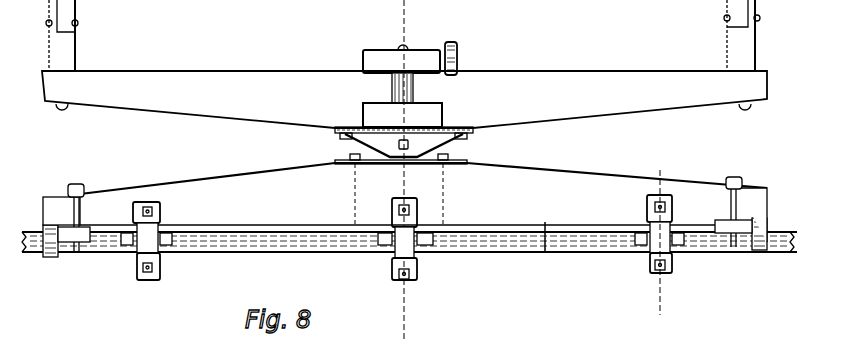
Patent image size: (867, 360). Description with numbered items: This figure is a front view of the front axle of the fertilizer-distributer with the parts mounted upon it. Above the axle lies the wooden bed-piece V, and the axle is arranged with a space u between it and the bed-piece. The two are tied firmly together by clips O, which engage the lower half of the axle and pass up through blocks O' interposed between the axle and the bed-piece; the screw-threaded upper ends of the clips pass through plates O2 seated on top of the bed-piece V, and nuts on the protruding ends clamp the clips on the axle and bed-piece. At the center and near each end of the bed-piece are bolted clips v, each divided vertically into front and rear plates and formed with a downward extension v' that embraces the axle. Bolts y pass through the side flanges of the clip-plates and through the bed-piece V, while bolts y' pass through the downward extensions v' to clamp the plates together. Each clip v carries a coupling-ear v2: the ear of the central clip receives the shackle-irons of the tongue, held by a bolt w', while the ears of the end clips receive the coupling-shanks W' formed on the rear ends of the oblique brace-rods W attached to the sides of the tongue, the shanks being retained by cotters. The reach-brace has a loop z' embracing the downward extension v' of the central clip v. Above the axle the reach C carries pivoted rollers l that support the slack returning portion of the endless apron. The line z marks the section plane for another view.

The reach C is at (378, 52).
The roller l is at (450, 42).
The bolt y is at (404, 170).
The bed-piece V is at (423, 183).
The space u is at (512, 242).
The clip O is at (405, 203).
The plate O2 is at (83, 193).
The block O' is at (405, 250).
The brace-rod W is at (402, 265).
The coupling-shank W' is at (403, 256).
The bolt w' is at (394, 251).
The clip v is at (402, 202).
The coupling-ear v2 is at (137, 250).
The downward extension v' is at (416, 276).
The bolt y' is at (407, 256).
The axis line z is at (655, 245).
The loop z' is at (430, 278).